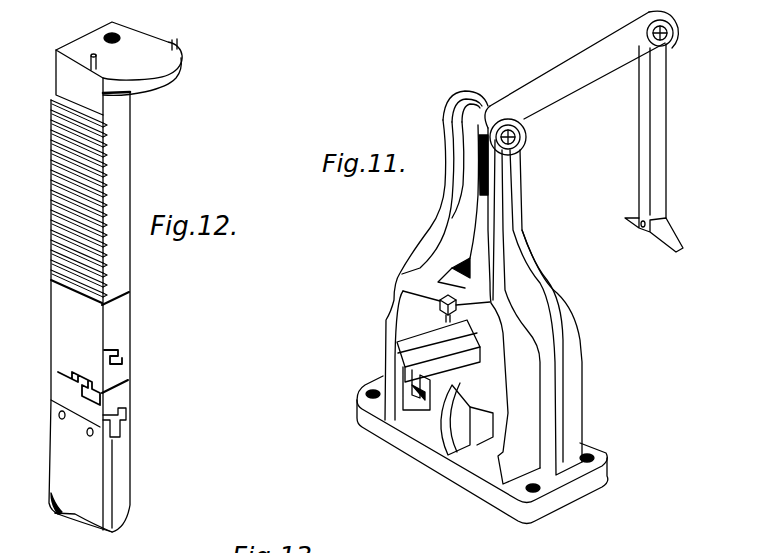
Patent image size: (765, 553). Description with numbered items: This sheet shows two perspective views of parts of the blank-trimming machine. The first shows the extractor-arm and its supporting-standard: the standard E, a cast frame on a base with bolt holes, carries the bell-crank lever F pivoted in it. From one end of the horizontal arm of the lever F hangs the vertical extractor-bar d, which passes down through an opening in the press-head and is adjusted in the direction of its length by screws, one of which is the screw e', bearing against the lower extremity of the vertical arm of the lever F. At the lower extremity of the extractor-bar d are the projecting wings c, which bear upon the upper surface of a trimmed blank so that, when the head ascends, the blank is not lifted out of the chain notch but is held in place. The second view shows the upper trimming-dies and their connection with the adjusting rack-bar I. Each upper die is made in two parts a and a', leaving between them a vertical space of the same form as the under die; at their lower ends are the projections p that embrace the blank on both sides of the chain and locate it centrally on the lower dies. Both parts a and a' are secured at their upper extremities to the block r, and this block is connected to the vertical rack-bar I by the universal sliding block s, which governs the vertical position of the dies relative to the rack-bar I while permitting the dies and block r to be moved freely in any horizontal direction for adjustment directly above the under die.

In FIG. 12, the rack-bar I is at (115, 277).
In FIG. 12, the universal sliding block s is at (90, 377).
In FIG. 12, the block r is at (114, 417).
In FIG. 12, the upper trimming-die part a is at (83, 513).
In FIG. 12, the upper trimming-die part a' is at (131, 484).
In FIG. 12, the projections p is at (50, 514).
In FIG. 11, the standard E is at (482, 307).
In FIG. 11, the screw e' is at (456, 308).
In FIG. 11, the bell-crank lever F is at (581, 83).
In FIG. 11, the extractor-bar d is at (652, 131).
In FIG. 11, the projecting wings c is at (651, 235).